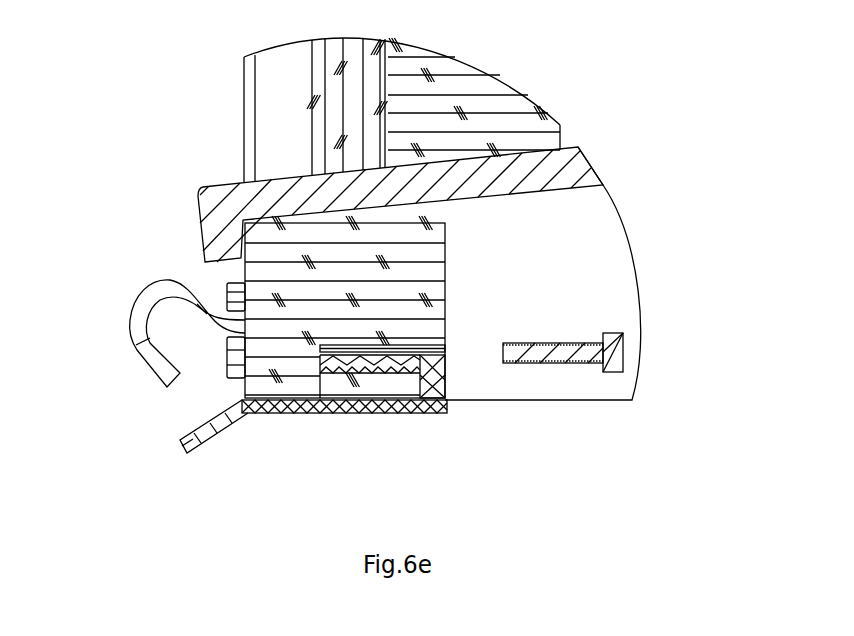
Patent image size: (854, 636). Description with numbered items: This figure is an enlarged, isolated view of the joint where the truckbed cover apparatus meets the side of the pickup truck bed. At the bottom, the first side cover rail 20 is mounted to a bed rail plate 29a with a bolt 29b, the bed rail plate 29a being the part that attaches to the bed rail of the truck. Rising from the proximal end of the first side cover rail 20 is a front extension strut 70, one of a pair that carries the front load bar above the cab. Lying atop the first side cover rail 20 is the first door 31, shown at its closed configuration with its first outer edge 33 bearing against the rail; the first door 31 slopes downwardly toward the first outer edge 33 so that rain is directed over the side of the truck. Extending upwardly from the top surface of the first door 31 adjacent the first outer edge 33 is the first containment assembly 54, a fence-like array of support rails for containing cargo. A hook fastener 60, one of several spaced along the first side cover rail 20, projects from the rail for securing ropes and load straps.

The front extension strut 70 is at (278, 83).
The first containment assembly 54 is at (493, 105).
The first door 31 is at (557, 165).
The first outer edge 33 is at (198, 197).
The first side cover rail 20 is at (420, 268).
The hook fastener 60 is at (128, 316).
The bed rail plate 29a is at (340, 415).
The bolt 29b is at (573, 363).